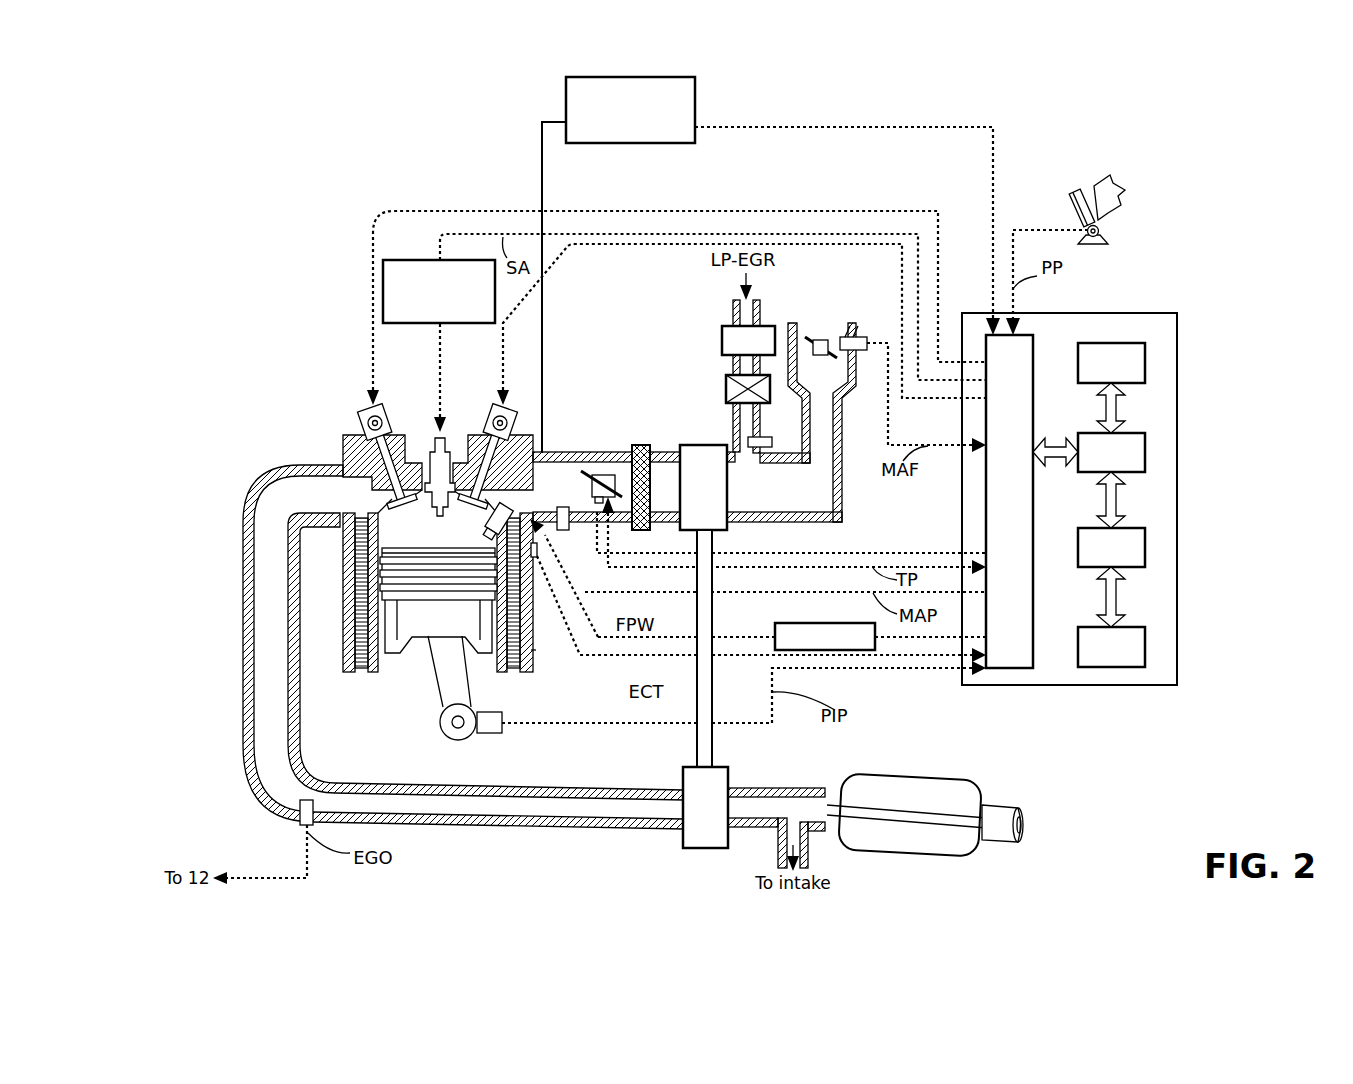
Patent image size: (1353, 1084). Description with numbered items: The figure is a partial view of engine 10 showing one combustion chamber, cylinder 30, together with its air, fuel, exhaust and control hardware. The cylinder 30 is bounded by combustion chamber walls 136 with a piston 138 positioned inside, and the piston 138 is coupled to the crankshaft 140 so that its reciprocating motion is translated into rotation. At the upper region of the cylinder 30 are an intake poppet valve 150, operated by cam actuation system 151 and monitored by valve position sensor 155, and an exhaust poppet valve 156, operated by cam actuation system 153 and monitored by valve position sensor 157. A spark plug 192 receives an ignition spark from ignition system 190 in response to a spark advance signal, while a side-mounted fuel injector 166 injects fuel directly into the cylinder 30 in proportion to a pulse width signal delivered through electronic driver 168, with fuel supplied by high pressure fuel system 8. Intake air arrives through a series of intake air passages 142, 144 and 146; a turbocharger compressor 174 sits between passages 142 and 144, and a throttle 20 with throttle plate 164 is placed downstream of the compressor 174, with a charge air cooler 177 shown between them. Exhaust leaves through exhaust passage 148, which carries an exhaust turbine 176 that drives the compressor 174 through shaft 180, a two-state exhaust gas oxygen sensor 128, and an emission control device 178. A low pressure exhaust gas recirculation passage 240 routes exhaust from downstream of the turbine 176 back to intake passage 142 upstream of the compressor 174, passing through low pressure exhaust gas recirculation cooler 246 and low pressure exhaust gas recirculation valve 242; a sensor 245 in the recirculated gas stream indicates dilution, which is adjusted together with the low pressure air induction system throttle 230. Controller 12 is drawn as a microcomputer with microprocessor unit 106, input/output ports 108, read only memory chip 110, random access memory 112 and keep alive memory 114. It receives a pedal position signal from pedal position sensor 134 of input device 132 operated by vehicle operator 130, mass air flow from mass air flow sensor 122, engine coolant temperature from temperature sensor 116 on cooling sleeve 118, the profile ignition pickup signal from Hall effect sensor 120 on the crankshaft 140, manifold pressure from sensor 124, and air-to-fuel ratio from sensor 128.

The engine 10 is at (160, 120).
The high pressure fuel system 8 is at (695, 90).
The controller 12 is at (1160, 313).
The throttle 20 is at (604, 473).
The cylinder 30 is at (348, 550).
The microprocessor unit 106 is at (1145, 449).
The input/output ports 108 is at (1033, 343).
The read only memory chip 110 is at (1145, 361).
The random access memory 112 is at (1145, 548).
The keep alive memory 114 is at (1145, 646).
The temperature sensor 116 is at (538, 562).
The cooling sleeve 118 is at (534, 656).
The Hall effect sensor 120 is at (492, 738).
The mass air flow sensor 122 is at (862, 337).
The manifold pressure sensor 124 is at (565, 532).
The exhaust gas sensor 128 is at (298, 818).
The vehicle operator 130 is at (1125, 192).
The input device 132 is at (1078, 200).
The pedal position sensor 134 is at (1100, 231).
The combustion chamber walls 136 is at (382, 660).
The piston 138 is at (423, 635).
The crankshaft 140 is at (448, 738).
The intake air passage 142 is at (808, 386).
The intake air passage 144 is at (664, 477).
The intake air passage 146 is at (541, 494).
The exhaust passage 148 is at (298, 505).
The intake poppet valve 150 is at (478, 507).
The cam actuation system 151 is at (497, 410).
The cam actuation system 153 is at (385, 412).
The valve position sensor 155 is at (514, 418).
The exhaust poppet valve 156 is at (390, 505).
The valve position sensor 157 is at (363, 420).
The throttle plate 164 is at (614, 513).
The fuel injector 166 is at (502, 520).
The electronic driver 168 is at (779, 623).
The compressor 174 is at (697, 447).
The exhaust turbine 176 is at (682, 835).
The charge air cooler 177 is at (635, 443).
The emission control device 178 is at (947, 780).
The shaft 180 is at (698, 732).
The ignition system 190 is at (400, 258).
The spark plug 192 is at (435, 467).
The LP AIS throttle 230 is at (813, 335).
The LP-EGR passage 240 is at (735, 308).
The LP-EGR valve 242 is at (725, 388).
The sensor 245 is at (760, 438).
The LP-EGR cooler 246 is at (733, 349).